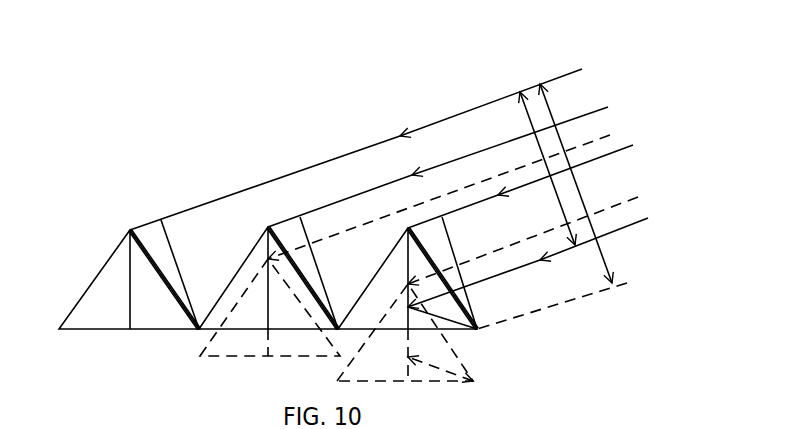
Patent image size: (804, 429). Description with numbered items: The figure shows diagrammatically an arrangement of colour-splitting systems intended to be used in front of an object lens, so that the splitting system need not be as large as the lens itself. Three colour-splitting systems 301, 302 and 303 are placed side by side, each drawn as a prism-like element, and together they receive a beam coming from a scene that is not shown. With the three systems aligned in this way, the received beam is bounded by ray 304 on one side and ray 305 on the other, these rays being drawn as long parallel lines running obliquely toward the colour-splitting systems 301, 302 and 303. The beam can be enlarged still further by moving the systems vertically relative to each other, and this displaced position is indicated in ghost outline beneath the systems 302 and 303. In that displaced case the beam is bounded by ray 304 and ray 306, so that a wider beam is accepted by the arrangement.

The colour-splitting system 301 is at (113, 257).
The colour-splitting system 302 is at (252, 258).
The colour-splitting system 303 is at (382, 270).
The ray 304 is at (562, 73).
The ray 305 is at (623, 230).
The ray 306 is at (597, 292).